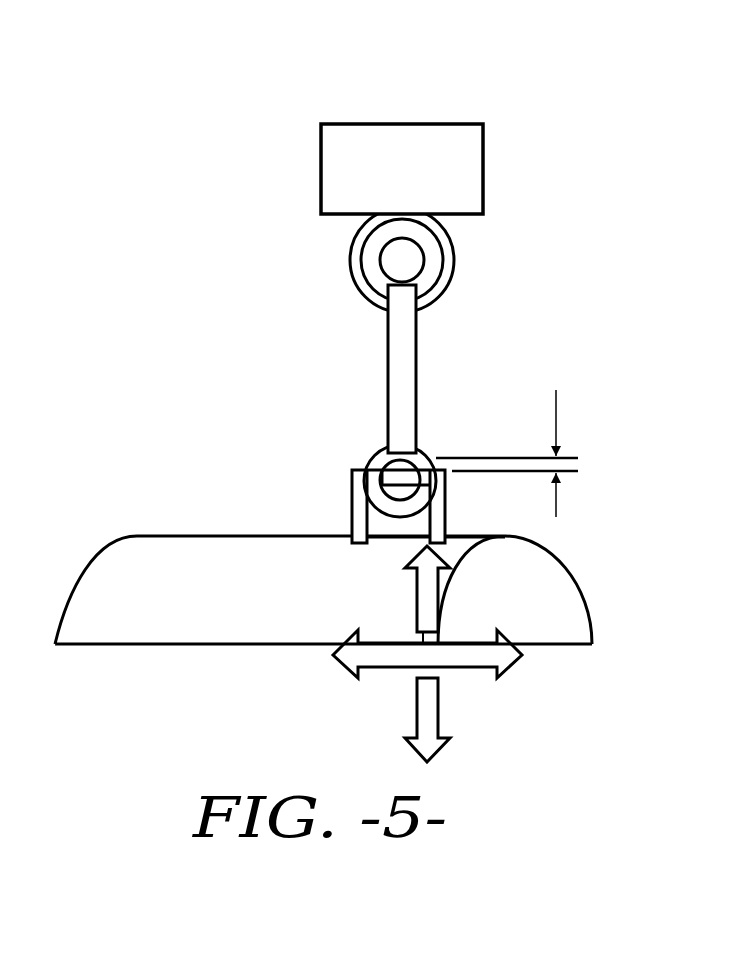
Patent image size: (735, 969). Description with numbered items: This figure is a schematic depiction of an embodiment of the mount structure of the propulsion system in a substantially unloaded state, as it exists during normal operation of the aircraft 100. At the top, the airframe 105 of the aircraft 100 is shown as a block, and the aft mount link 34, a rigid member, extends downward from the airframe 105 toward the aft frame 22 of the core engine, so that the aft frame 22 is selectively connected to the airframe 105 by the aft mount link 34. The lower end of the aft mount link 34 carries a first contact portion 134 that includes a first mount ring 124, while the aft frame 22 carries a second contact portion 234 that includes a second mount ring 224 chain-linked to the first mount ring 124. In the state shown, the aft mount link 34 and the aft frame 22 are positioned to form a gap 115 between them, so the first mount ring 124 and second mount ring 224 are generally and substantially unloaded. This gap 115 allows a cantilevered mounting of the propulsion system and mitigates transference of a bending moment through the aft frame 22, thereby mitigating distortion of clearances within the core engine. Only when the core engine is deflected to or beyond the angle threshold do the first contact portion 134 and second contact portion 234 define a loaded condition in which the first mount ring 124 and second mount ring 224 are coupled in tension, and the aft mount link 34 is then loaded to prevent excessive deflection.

The aircraft 100 is at (431, 94).
The airframe 105 is at (484, 173).
The aft mount link 34 is at (435, 357).
The aft frame 22 is at (537, 582).
The gap 115 is at (557, 410).
The first mount ring 124 is at (373, 457).
The first contact portion 134 is at (428, 434).
The second mount ring 224 is at (352, 483).
The second contact portion 234 is at (336, 515).